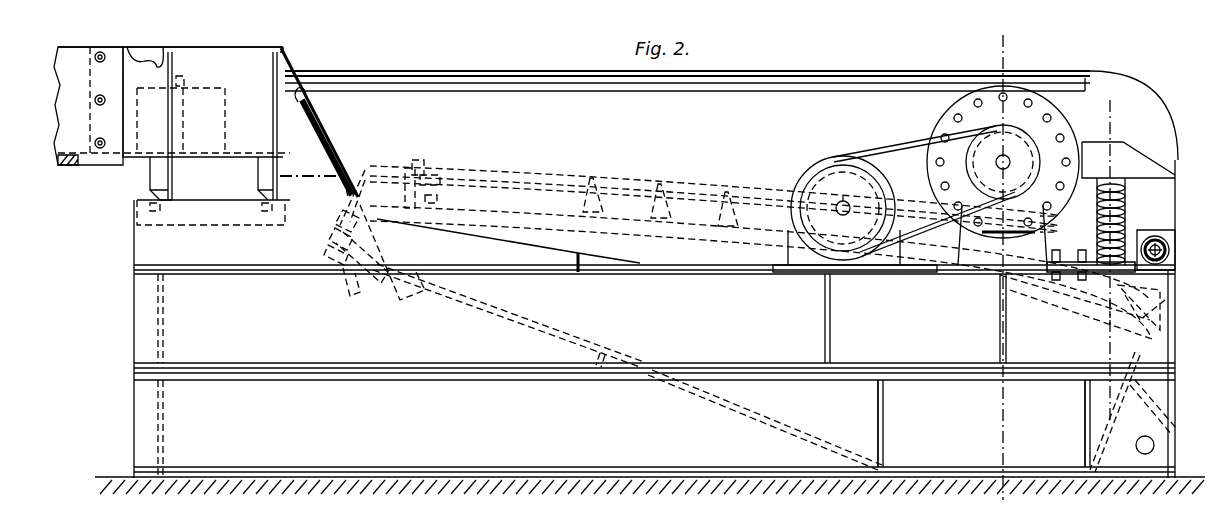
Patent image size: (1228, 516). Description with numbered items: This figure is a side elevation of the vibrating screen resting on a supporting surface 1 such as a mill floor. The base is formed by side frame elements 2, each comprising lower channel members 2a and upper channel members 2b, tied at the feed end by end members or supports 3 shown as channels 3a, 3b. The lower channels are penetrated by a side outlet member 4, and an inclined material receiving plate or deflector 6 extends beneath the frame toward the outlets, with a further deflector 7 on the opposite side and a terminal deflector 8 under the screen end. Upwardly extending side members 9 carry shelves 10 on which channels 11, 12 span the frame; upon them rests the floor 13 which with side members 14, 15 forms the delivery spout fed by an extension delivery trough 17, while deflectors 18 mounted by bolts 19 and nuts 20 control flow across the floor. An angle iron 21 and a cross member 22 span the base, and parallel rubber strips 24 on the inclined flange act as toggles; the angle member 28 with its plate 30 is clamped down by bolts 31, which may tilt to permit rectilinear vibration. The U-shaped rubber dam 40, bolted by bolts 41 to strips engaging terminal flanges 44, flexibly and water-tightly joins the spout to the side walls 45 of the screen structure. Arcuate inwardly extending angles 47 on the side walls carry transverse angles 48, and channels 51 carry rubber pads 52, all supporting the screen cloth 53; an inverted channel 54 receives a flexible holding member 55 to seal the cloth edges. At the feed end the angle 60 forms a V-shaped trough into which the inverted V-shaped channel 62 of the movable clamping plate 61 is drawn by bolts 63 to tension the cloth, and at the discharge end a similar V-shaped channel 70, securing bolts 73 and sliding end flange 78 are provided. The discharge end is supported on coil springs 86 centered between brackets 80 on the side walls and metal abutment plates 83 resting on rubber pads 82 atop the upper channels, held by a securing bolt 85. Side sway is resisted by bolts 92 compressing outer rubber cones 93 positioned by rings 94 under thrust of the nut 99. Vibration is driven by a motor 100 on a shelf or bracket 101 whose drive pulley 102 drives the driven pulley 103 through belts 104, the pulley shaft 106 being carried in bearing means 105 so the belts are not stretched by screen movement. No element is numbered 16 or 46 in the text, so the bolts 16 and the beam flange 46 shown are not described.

The supporting surface 1 is at (243, 487).
The side frame elements 2 is at (134, 392).
The lower channel members 2a is at (269, 418).
The upper channel members 2b is at (251, 318).
The end members or supports 3 is at (1003, 58).
The channel 3a is at (163, 415).
The channel 3b is at (163, 313).
The side outlet member 4 is at (895, 412).
The deflector or inclined material receiving plate 6 is at (517, 308).
The deflector 7 is at (1110, 430).
The terminal deflector 8 is at (1110, 120).
The upwardly extending side members 9 is at (136, 258).
The angle members or shelves 10 is at (140, 215).
The channel 11 is at (166, 180).
The channel 12 is at (270, 178).
The floor 13 is at (235, 153).
The side member 14 is at (255, 47).
The side member 15 is at (145, 52).
The bolts 16 is at (100, 100).
The extension delivery trough 17 is at (65, 166).
The deflectors 18 is at (210, 92).
The bolts 19 is at (182, 78).
The nuts 20 is at (192, 82).
The angle iron 21 is at (345, 292).
The cross member or support 22 is at (402, 303).
The rubber strips 24 is at (330, 252).
The angle member 28 is at (335, 237).
The plate 30 is at (385, 225).
The bolts 31 is at (343, 214).
The U-shaped rubber member or dam 40 is at (312, 173).
The bolts 41 is at (300, 132).
The terminal flange 44 is at (290, 55).
The side walls 45 is at (470, 98).
The beam flange 46 is at (558, 85).
The inwardly extending angles 47 is at (723, 212).
The transverse angles 48 is at (500, 203).
The channels 51 is at (690, 197).
The rubber pads 52 is at (704, 200).
The screen cloth or mesh 53 is at (694, 190).
The inverted channel 54 is at (606, 172).
The rubber hose or flexible holding member 55 is at (636, 180).
The angle 60 is at (440, 188).
The movable plate or clamping member 61 is at (392, 165).
The inverted V-shaped member or channel 62 is at (435, 176).
The bolts 63 is at (418, 160).
The V-shaped upwardly concave channel 70 is at (1110, 305).
The securing bolts 73 is at (1165, 312).
The outer or end flange 78 is at (1165, 325).
The brackets or angles 80 is at (1138, 172).
The rubber pads 82 is at (1078, 275).
The metal abutment plates 83 is at (1060, 263).
The locking or securing bolt 85 is at (1083, 260).
The coil spring 86 is at (1105, 190).
The bolts 92 is at (1170, 250).
The outer rubber cones 93 is at (1165, 237).
The rings 94 is at (1165, 262).
The nut 99 is at (1150, 238).
The motor 100 is at (808, 170).
The shelf or bracket 101 is at (797, 268).
The drive pulley 102 is at (832, 180).
The driven pulley 103 is at (998, 120).
The belts 104 is at (885, 152).
The bearing means 105 is at (965, 185).
The shaft 106 is at (1000, 158).